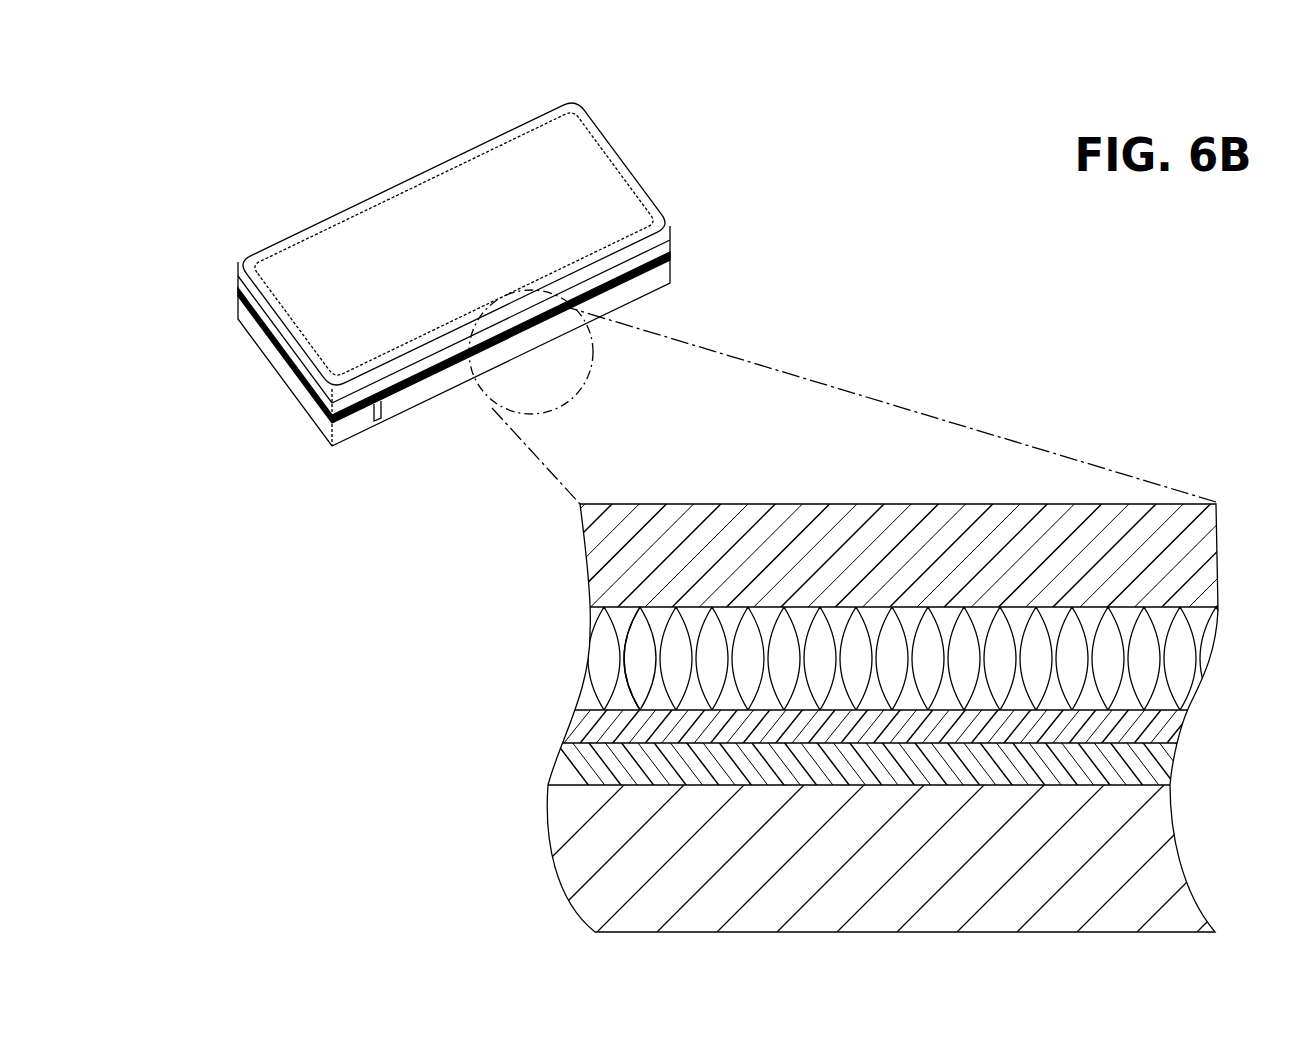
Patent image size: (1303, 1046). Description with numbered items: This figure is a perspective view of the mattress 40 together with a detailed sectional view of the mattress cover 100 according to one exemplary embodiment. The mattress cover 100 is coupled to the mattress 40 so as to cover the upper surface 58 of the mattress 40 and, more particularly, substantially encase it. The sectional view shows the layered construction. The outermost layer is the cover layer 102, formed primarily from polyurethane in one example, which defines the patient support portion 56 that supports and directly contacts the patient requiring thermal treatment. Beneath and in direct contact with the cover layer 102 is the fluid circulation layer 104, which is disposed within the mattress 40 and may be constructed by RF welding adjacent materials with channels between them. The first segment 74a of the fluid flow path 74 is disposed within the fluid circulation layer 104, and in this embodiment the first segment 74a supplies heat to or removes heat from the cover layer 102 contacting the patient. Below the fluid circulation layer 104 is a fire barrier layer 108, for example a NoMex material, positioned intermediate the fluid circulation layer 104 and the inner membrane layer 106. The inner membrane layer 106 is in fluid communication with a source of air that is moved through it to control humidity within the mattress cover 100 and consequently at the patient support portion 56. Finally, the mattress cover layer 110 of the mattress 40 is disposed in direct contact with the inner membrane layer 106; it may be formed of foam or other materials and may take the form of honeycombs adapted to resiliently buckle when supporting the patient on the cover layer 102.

The mattress 40 is at (507, 122).
The upper surface 58 is at (557, 143).
The mattress cover 100 is at (402, 207).
The patient support portion 56 is at (911, 498).
The cover layer 102 is at (583, 550).
The fluid circulation layer 104 is at (587, 653).
The fluid flow path 74 is at (640, 672).
The first segment 74a is at (617, 675).
The fire barrier layer 108 is at (1186, 720).
The inner membrane layer 106 is at (552, 750).
The mattress cover layer 110 is at (547, 837).